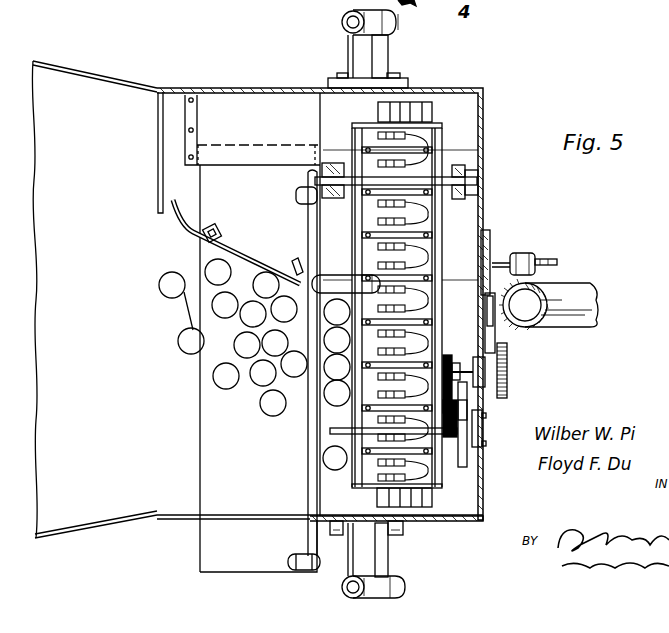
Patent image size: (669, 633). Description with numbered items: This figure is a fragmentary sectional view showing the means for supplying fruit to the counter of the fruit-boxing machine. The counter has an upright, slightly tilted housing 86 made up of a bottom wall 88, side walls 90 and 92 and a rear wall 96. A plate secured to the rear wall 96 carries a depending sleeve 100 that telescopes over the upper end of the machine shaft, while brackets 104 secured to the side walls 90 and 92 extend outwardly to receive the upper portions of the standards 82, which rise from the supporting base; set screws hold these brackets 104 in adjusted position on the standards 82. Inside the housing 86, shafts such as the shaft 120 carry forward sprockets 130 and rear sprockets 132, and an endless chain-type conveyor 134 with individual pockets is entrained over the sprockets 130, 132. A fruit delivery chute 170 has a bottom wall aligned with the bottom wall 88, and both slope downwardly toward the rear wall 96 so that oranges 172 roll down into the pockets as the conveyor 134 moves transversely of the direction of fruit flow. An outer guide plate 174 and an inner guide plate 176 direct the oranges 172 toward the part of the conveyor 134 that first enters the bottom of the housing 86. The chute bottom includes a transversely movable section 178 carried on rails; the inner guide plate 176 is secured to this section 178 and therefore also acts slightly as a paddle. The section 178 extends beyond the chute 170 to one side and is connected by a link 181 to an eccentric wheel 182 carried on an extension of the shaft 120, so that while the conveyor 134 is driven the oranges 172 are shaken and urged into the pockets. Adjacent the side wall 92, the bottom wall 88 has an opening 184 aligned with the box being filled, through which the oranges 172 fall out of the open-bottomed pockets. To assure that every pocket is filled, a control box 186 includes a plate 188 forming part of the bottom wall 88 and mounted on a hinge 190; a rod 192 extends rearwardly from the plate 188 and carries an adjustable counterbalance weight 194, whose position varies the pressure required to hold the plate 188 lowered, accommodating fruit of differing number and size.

The standards 82 is at (342, 24).
The housing 86 is at (487, 125).
The bottom wall 88 is at (457, 507).
The side wall 90 is at (428, 522).
The side wall 92 is at (443, 87).
The rear wall 96 is at (485, 480).
The sleeve 100 is at (587, 307).
The brackets 104 is at (382, 60).
The shaft 120 is at (320, 165).
The forward sprockets 130 is at (345, 202).
The rear sprockets 132 is at (476, 206).
The endless conveyor 134 is at (447, 322).
The fruit delivery chute 170 is at (49, 62).
The oranges 172 is at (250, 410).
The outer guide plate 174 is at (158, 140).
The inner guide plate 176 is at (190, 238).
The transversely movable section 178 is at (272, 557).
The link 181 is at (306, 483).
The eccentric wheel 182 is at (306, 178).
The opening 184 is at (462, 139).
The control box 186 is at (503, 227).
The plate 188 is at (493, 247).
The hinge 190 is at (470, 258).
The rod 192 is at (558, 262).
The counterbalance weight 194 is at (535, 257).